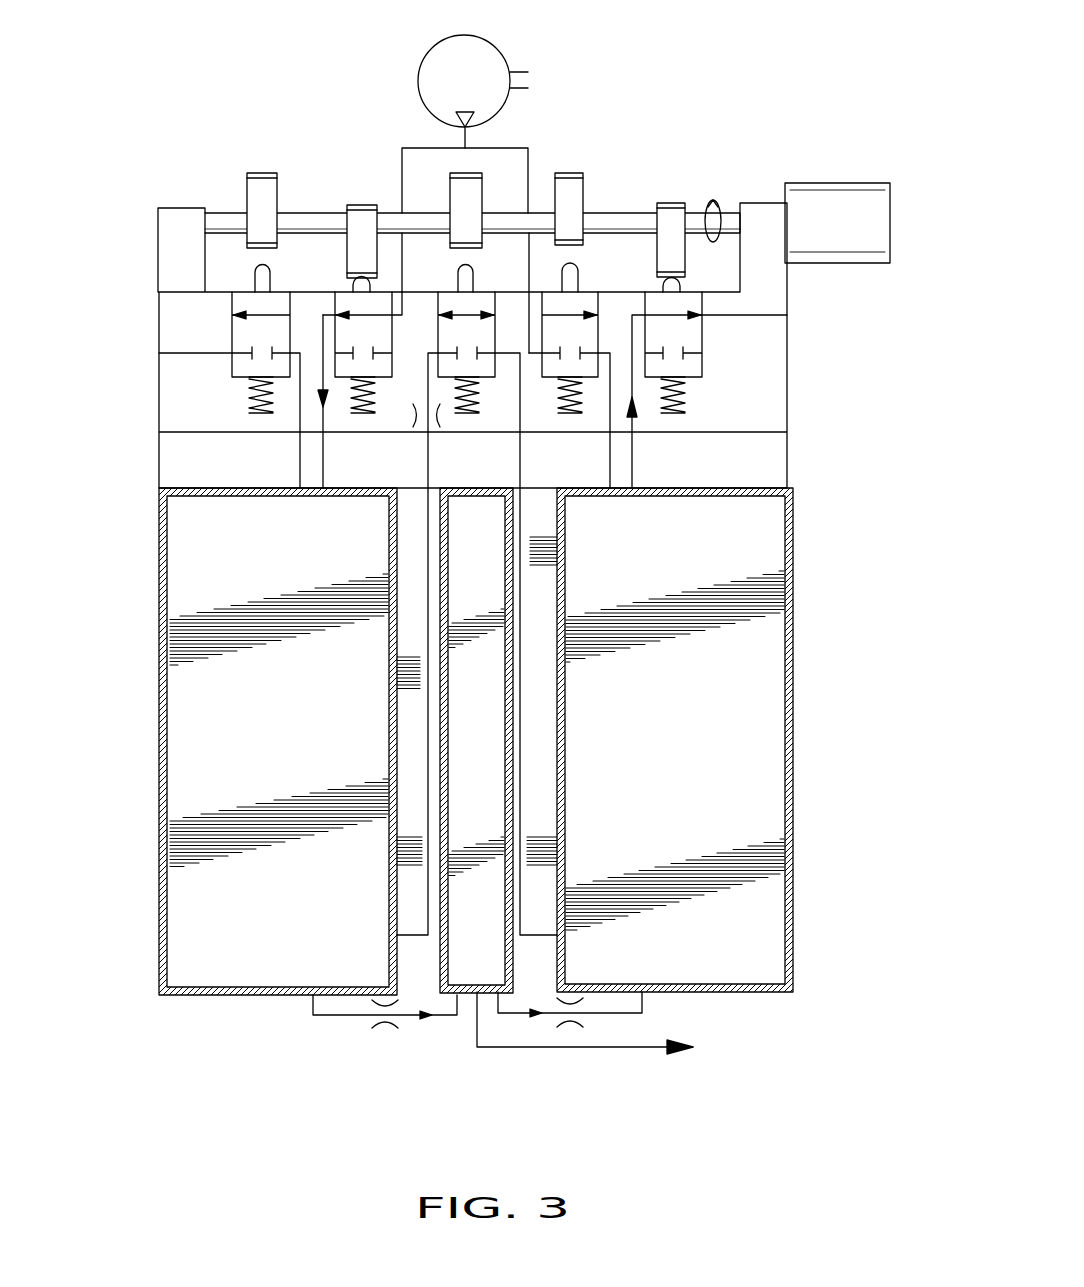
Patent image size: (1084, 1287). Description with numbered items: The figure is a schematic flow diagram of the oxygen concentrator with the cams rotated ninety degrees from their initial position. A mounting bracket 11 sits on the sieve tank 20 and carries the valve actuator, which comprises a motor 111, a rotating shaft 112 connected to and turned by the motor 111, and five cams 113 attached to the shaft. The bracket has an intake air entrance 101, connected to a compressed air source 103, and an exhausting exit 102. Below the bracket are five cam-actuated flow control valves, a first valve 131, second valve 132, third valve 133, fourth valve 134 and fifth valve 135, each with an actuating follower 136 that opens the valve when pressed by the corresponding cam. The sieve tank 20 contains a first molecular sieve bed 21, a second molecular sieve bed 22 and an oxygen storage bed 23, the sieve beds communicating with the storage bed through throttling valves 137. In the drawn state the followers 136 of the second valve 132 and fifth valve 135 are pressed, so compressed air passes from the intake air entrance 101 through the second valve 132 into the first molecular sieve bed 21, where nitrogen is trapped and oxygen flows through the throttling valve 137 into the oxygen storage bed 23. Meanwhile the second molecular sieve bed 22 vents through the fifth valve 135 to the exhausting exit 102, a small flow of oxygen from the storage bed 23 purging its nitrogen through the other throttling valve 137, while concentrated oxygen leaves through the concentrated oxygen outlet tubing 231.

The mounting bracket 11 is at (777, 407).
The sieve tank 20 is at (480, 741).
The first molecular sieve bed 21 is at (175, 713).
The second molecular sieve bed 22 is at (770, 683).
The oxygen storage bed 23 is at (488, 818).
The intake air entrance 101 is at (462, 138).
The exhausting exit 102 is at (160, 355).
The compressed air source 103 is at (480, 62).
The motor 111 is at (878, 197).
The rotating shaft 112 is at (622, 215).
The cams 113 is at (567, 180).
The first valve 131 is at (243, 337).
The second valve 132 is at (355, 305).
The third valve 133 is at (450, 300).
The fourth valve 134 is at (580, 308).
The fifth valve 135 is at (690, 368).
The actuating follower 136 is at (258, 288).
The throttling valve 137 is at (413, 427).
The concentrated oxygen outlet tubing 231 is at (570, 1047).